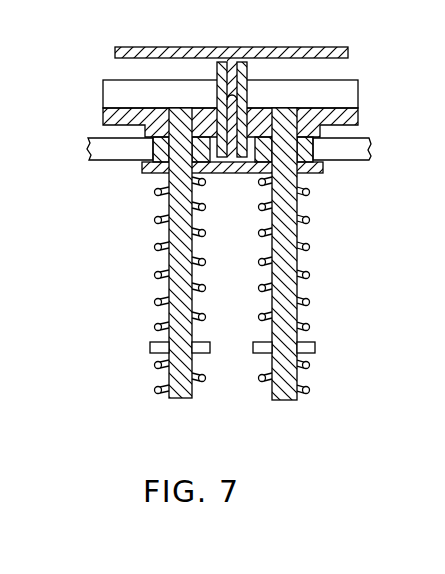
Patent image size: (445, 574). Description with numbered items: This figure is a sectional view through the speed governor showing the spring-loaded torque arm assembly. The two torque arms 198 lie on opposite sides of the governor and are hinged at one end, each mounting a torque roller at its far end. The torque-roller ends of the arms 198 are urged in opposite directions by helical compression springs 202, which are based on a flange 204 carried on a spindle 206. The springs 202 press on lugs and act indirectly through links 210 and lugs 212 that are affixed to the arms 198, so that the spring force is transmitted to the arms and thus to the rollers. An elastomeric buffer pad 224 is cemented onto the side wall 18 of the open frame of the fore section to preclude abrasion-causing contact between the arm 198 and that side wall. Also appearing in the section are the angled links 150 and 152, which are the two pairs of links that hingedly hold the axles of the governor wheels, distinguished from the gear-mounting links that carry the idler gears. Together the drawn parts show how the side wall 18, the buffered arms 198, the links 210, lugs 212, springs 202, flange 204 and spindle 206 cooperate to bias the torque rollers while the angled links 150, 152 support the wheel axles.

The torque arm 198 is at (197, 46).
The link 210 is at (216, 72).
The lug 212 is at (233, 100).
The elastomeric buffer pad 224 is at (358, 96).
The side wall 18 is at (358, 116).
The angled link 150 is at (87, 150).
The angled link 152 is at (371, 150).
The helical compression spring 202 is at (155, 327).
The flange 204 is at (253, 351).
The spindle 206 is at (272, 390).